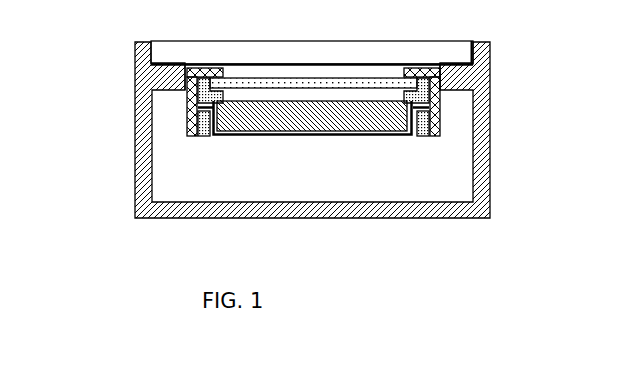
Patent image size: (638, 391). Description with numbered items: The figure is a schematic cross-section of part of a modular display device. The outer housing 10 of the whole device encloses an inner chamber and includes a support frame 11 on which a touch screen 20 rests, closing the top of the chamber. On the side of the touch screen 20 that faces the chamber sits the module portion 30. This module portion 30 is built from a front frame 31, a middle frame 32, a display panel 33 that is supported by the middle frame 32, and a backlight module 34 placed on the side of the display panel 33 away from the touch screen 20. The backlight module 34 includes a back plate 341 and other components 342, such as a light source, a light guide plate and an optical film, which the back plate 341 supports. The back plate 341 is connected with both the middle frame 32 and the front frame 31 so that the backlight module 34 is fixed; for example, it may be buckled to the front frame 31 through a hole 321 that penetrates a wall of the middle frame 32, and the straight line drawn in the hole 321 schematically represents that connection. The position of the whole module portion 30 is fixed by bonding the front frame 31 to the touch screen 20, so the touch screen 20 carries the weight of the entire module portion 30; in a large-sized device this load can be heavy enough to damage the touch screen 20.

The housing 10 is at (487, 147).
The support frame 11 is at (460, 80).
The touch screen 20 is at (447, 53).
The module portion 30 is at (60, 50).
The front frame 31 is at (187, 68).
The middle frame 32 is at (200, 109).
The hole 321 is at (213, 110).
The display panel 33 is at (205, 80).
The backlight module 34 is at (243, 140).
The back plate 341 is at (225, 135).
The other components 342 is at (225, 123).